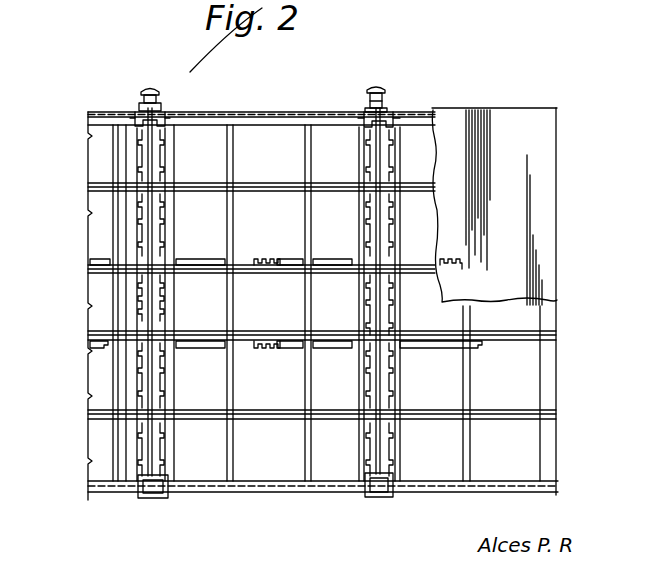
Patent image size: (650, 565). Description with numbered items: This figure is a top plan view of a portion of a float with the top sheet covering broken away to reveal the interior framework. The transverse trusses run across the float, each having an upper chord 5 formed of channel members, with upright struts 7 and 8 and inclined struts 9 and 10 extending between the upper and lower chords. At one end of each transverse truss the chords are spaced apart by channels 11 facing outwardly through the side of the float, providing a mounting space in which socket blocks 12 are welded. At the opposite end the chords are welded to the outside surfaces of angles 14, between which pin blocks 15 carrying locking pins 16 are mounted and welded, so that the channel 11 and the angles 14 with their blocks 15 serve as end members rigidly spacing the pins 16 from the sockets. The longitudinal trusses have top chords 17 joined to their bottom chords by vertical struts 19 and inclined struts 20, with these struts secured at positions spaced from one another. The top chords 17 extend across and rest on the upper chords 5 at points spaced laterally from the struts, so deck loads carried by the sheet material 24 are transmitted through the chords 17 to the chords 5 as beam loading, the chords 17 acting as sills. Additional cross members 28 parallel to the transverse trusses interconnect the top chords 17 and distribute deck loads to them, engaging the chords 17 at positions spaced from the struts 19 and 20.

The upper chord 5 is at (172, 156).
The upright strut 7 is at (141, 208).
The upright strut 8 is at (160, 309).
The inclined strut 9 is at (141, 152).
The inclined strut 10 is at (142, 237).
The channel 11 is at (183, 492).
The socket block 12 is at (152, 496).
The angle 14 is at (173, 115).
The pin block 15 is at (135, 112).
The locking pin 16 is at (143, 90).
The top chord 17 is at (335, 180).
The vertical strut 19 is at (270, 258).
The inclined strut 20 is at (198, 258).
The sheet material 24 is at (530, 163).
The cross member 28 is at (304, 147).